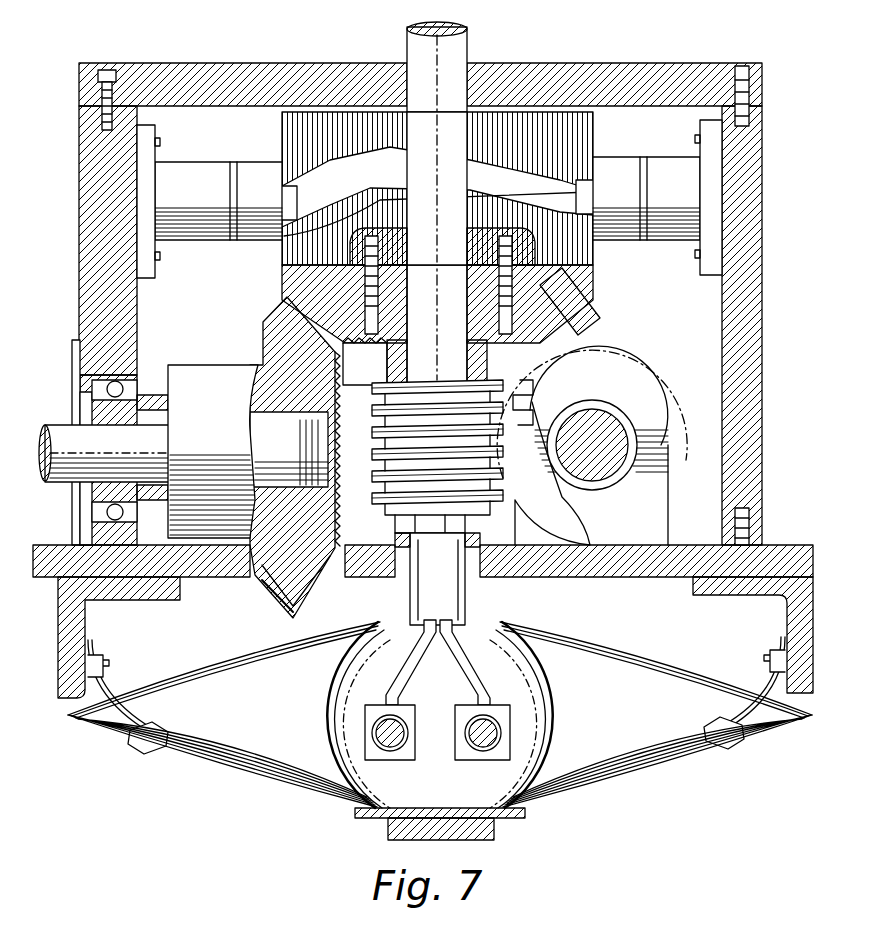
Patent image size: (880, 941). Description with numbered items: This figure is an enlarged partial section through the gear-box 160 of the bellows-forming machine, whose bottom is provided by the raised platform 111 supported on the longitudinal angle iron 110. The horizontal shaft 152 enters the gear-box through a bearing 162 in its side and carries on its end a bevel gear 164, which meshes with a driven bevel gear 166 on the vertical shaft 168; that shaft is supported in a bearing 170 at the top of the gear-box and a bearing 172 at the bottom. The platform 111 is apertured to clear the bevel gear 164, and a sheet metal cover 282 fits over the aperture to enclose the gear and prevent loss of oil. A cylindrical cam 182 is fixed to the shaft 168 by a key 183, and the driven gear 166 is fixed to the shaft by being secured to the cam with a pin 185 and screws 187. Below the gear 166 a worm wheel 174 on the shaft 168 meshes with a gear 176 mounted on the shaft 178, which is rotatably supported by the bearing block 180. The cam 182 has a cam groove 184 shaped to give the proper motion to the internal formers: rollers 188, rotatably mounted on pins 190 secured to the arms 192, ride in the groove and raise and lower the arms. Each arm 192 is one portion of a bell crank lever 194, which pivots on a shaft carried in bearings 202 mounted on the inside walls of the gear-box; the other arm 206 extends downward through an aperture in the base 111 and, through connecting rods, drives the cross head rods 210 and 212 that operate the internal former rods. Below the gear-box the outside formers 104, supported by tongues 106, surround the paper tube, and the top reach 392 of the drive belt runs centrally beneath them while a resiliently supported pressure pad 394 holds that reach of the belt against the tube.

The gear-box 160 is at (226, 80).
The vertical shaft 168 is at (412, 55).
The bearing 170 is at (466, 60).
The cylindrical cam 182 is at (596, 135).
The cam groove 184 is at (360, 175).
The key 183 is at (392, 238).
The rollers 188 is at (282, 188).
The pins 190 is at (228, 195).
The arms 192 is at (252, 228).
The bearings 202 is at (172, 225).
The pin 185 is at (330, 272).
The screws 187 is at (545, 272).
The driven bevel gear 166 is at (583, 300).
The worm wheel 174 is at (378, 385).
The bearing 172 is at (470, 570).
The gear 176 is at (650, 372).
The shaft 178 is at (604, 475).
The bearing block 180 is at (655, 520).
The bearing 162 is at (140, 388).
The shaft 152 is at (68, 425).
The bevel gear 164 is at (312, 572).
The sheet metal cover 282 is at (272, 598).
The platform 111 is at (195, 578).
The angle iron 110 is at (68, 590).
The tongues 106 is at (102, 680).
The outside formers 104 is at (345, 795).
The bell crank lever 194 is at (415, 645).
The arm 206 is at (456, 650).
The cross head rod 212 is at (395, 748).
The cross head rod 210 is at (486, 748).
The top reach of the belt 392 is at (527, 812).
The pressure pad 394 is at (494, 832).